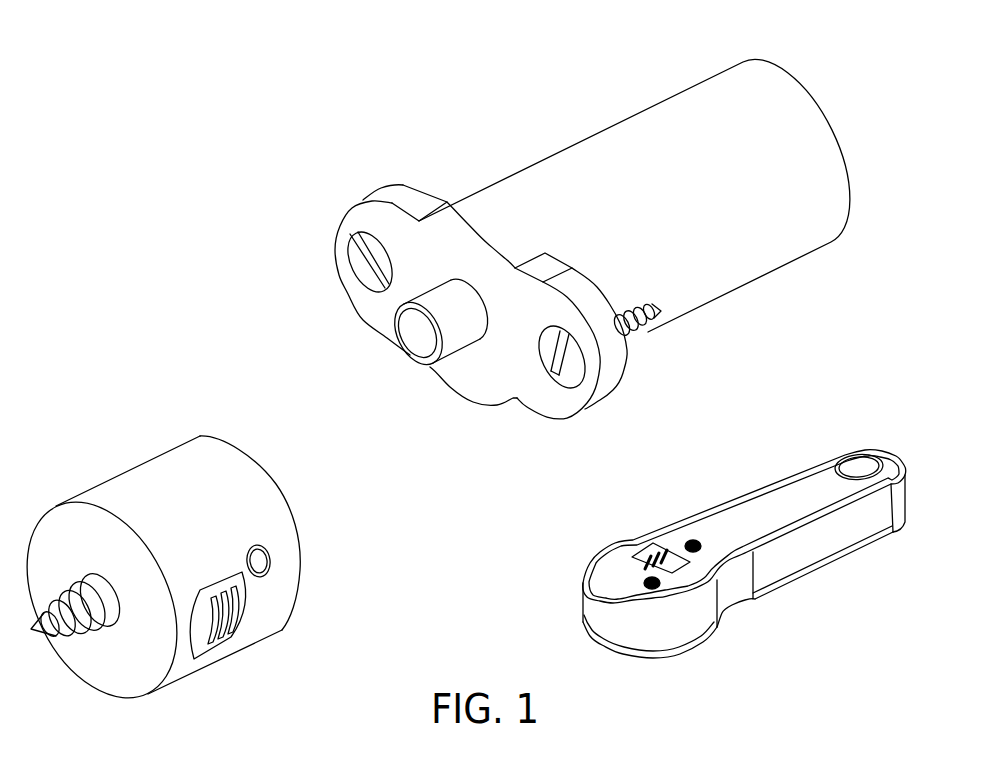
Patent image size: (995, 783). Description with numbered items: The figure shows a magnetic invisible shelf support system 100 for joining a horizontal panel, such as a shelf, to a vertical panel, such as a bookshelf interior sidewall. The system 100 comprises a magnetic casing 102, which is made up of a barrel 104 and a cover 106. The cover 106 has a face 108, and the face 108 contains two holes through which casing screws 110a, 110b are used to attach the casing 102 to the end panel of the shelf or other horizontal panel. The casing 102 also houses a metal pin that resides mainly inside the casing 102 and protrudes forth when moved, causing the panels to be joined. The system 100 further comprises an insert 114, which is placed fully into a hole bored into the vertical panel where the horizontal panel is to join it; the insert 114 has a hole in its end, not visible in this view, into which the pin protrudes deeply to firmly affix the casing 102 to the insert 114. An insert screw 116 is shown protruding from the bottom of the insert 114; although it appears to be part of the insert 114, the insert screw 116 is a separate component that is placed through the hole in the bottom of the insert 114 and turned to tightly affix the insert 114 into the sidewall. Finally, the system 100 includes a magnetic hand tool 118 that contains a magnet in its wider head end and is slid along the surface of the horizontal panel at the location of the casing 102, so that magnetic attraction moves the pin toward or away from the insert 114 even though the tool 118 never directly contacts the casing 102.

The system 100 is at (196, 84).
The magnetic casing 102 is at (509, 125).
The barrel 104 is at (650, 96).
The cover 106 is at (421, 204).
The face 108 is at (370, 220).
The casing screw 110a is at (365, 273).
The casing screw 110b is at (552, 353).
The insert 114 is at (152, 466).
The insert screw 116 is at (61, 657).
The magnetic hand tool 118 is at (827, 470).